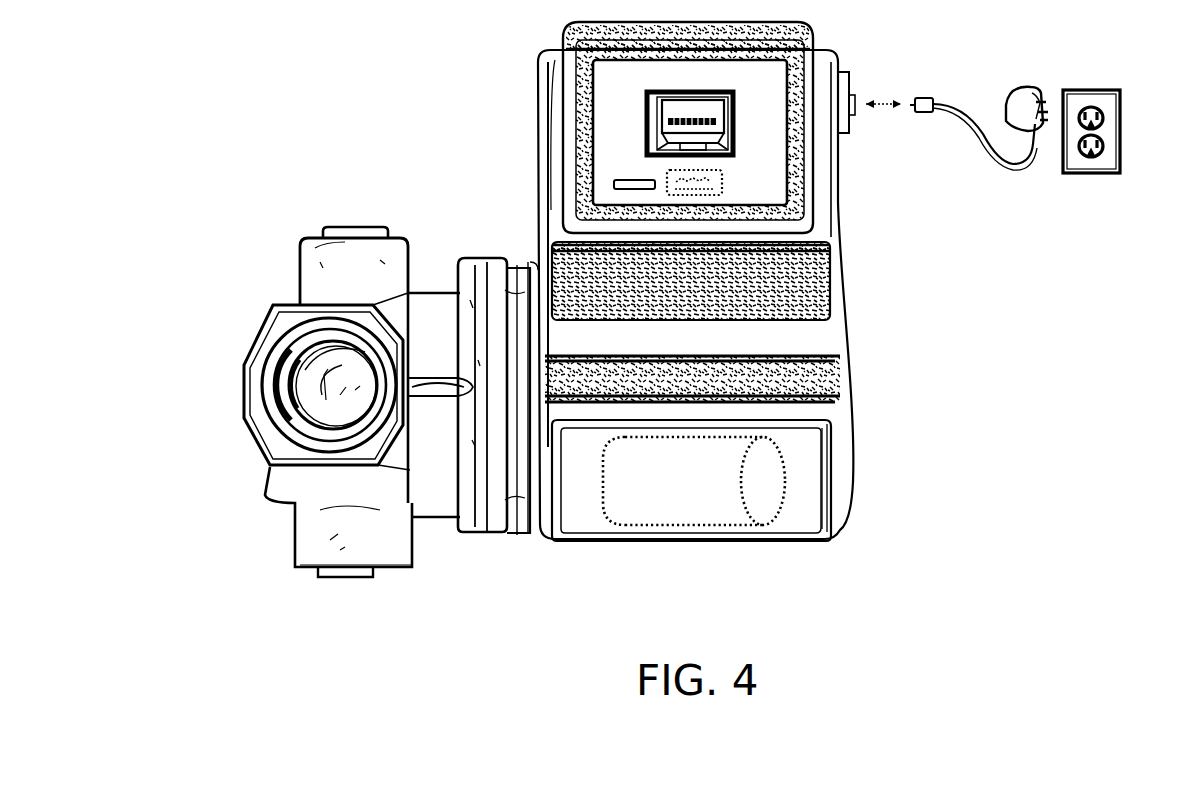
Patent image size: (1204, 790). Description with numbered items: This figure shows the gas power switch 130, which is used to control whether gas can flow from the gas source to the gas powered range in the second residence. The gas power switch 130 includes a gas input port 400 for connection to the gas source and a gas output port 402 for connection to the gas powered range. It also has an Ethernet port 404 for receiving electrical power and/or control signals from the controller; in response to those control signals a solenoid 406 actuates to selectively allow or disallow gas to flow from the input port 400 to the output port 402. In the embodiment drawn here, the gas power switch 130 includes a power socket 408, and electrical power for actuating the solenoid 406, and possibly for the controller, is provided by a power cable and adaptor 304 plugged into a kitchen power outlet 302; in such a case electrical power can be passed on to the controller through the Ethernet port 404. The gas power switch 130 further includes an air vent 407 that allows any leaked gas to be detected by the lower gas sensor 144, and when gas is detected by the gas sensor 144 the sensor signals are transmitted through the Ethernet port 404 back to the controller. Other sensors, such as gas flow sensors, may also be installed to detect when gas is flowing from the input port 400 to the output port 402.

The gas power switch 130 is at (378, 93).
The gas input port 400 is at (342, 226).
The gas output port 402 is at (268, 390).
The Ethernet port 404 is at (735, 128).
The solenoid 406 is at (678, 527).
The air vent 407 is at (614, 182).
The power socket 408 is at (853, 95).
The lower gas sensor 144 is at (722, 190).
The kitchen electrical outlet 302 is at (1121, 93).
The power cable and adaptor 304 is at (1010, 170).